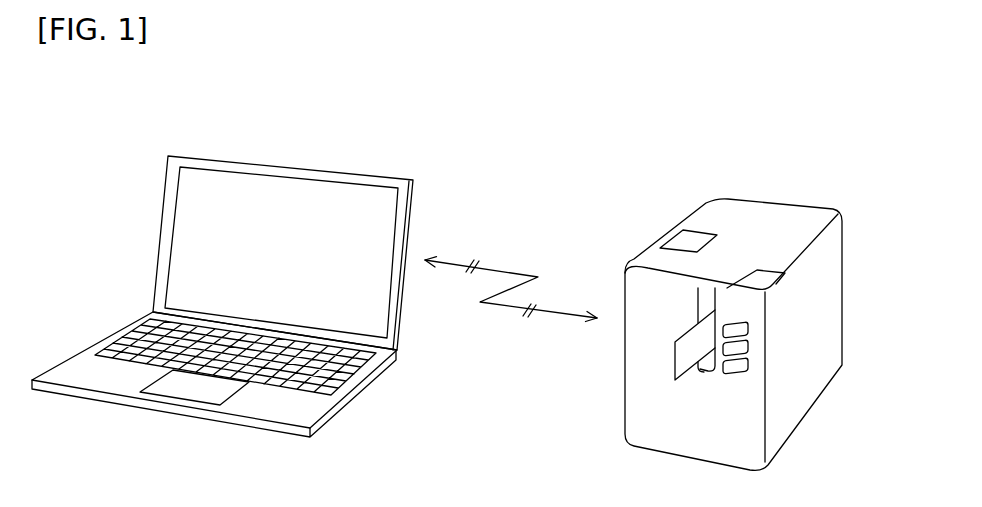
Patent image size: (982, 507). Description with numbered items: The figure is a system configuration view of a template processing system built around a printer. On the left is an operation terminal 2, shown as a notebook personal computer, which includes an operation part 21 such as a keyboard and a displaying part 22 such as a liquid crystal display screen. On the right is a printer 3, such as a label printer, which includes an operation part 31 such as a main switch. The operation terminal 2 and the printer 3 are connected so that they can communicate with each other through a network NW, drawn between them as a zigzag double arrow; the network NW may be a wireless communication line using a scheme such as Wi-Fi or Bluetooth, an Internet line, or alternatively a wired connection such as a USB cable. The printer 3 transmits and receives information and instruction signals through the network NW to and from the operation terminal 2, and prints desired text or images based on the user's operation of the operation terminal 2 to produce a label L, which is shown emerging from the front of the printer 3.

The operation terminal 2 is at (267, 272).
The operation part 21 is at (127, 343).
The displaying part 22 is at (190, 187).
The printer 3 is at (735, 280).
The operation part 31 is at (748, 366).
The label L is at (675, 358).
The network NW is at (517, 272).